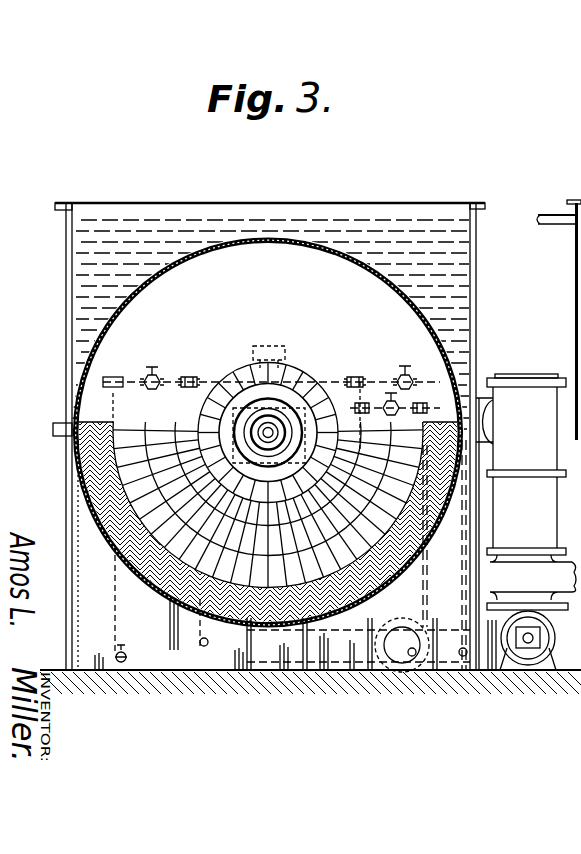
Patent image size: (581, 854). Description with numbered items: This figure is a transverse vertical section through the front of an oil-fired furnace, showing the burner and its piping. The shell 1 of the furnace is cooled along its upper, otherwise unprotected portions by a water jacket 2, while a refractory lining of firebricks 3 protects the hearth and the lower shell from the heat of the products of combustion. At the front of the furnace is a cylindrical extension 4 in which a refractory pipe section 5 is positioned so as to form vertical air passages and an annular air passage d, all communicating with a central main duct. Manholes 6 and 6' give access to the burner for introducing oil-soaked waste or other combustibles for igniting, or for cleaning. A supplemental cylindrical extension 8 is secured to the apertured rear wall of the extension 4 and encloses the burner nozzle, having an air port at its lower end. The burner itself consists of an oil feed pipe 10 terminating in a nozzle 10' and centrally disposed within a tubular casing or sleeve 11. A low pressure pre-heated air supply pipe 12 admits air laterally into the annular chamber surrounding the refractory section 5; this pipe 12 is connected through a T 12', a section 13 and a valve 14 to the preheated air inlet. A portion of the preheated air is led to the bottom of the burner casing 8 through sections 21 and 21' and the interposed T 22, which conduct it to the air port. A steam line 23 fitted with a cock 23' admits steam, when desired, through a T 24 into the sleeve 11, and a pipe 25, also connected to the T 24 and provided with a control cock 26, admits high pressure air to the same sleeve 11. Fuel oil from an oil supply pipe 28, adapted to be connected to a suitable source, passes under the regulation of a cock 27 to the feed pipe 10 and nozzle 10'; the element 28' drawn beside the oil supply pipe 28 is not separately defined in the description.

The shell 1 is at (100, 351).
The water jacket 2 is at (288, 220).
The firebricks 3 is at (112, 528).
The cylindrical extension 4 is at (302, 395).
The pipe section 5 is at (280, 425).
The manhole 6 is at (285, 317).
The manhole 6' is at (165, 613).
The supplemental cylindrical extension 8 is at (203, 378).
The oil feed pipe 10 is at (271, 365).
The nozzle 10' is at (142, 420).
The tubular casing or sleeve 11 is at (245, 461).
The low pressure pre-heated air supply pipe 12 is at (526, 320).
The T 12' is at (506, 390).
The section 13 is at (526, 464).
The valve 14 is at (531, 612).
The section 21 is at (270, 667).
The section 21' is at (161, 609).
The T 22 is at (262, 690).
The steam line 23 is at (215, 346).
The cock 23' is at (161, 348).
The T 24 is at (266, 344).
The pipe 25 is at (329, 390).
The control cock 26 is at (402, 364).
The cock 27 is at (378, 398).
The oil supply pipe 28 is at (282, 677).
The pump pipe 28' is at (411, 555).
The annular air passage d is at (210, 445).